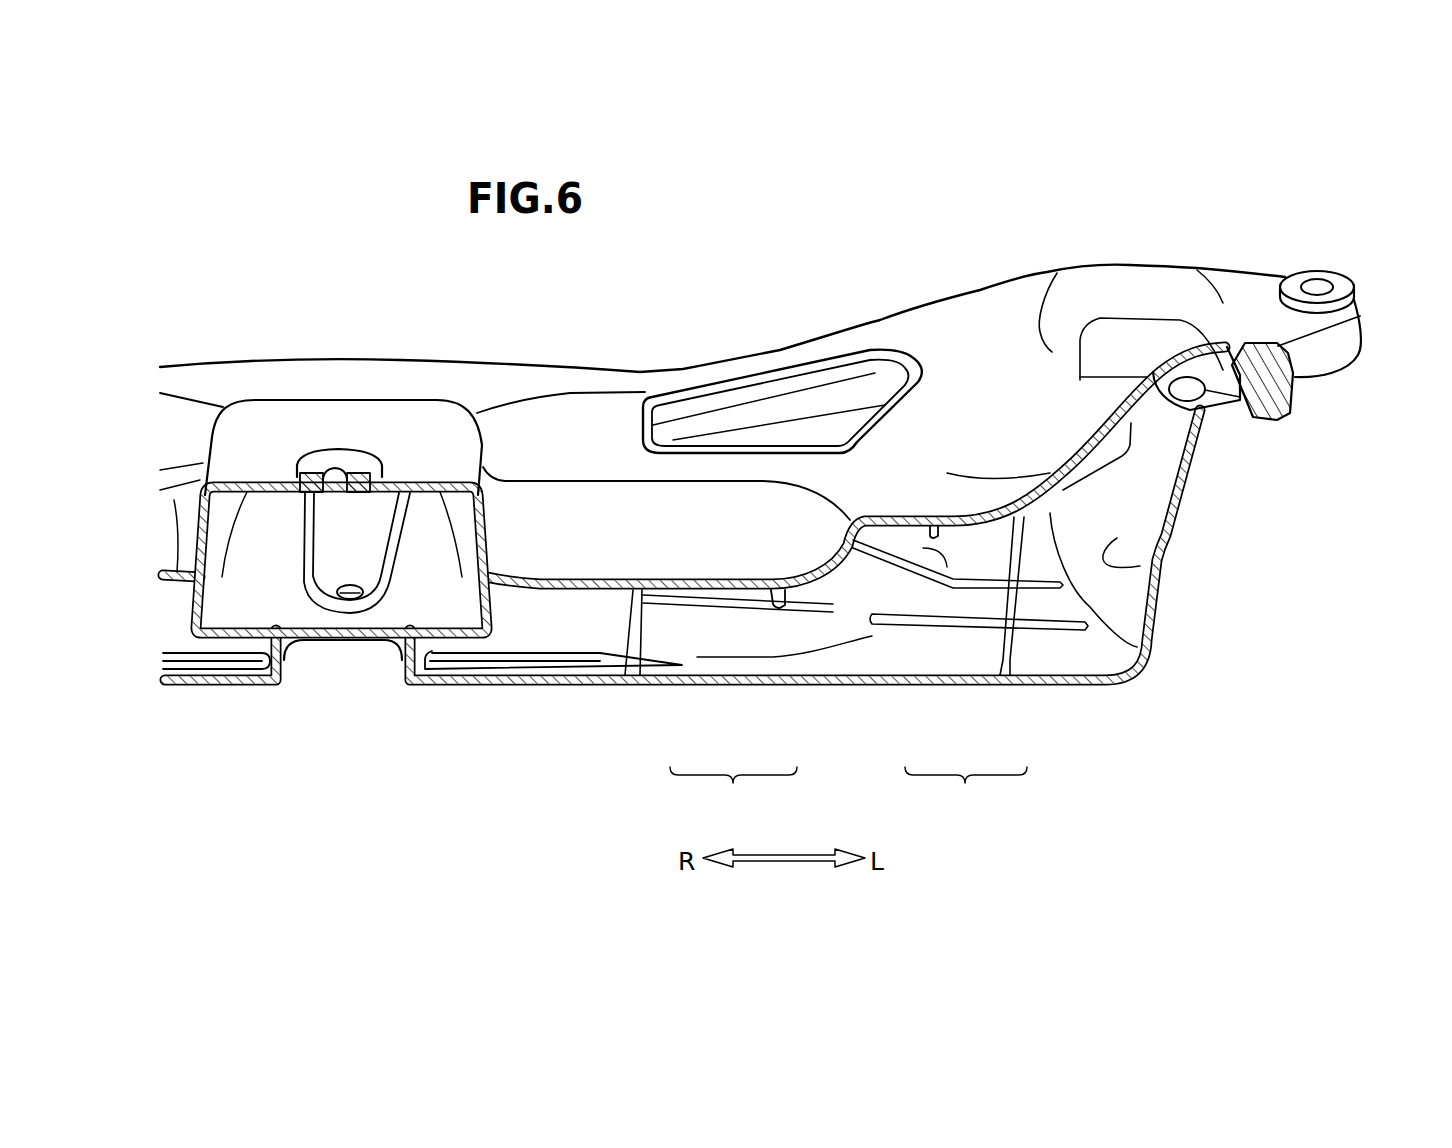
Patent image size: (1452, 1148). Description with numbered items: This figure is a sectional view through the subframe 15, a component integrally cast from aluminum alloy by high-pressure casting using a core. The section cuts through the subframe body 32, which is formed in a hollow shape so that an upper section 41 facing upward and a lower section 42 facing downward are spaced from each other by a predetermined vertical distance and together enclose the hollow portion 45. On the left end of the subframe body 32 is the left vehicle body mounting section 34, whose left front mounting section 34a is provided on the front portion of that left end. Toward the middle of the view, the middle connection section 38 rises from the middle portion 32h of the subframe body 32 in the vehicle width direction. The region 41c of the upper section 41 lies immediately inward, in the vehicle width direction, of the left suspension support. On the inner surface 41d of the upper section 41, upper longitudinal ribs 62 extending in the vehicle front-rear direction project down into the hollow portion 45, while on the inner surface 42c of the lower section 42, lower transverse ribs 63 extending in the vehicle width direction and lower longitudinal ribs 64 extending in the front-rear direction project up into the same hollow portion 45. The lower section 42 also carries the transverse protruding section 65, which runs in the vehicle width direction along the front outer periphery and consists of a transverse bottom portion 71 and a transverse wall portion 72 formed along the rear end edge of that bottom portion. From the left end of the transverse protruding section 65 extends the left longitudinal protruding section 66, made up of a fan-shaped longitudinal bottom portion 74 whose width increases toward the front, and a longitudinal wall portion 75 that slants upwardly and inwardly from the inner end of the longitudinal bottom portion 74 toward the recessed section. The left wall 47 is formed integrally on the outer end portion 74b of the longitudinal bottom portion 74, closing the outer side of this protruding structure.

The subframe 15 is at (969, 198).
The subframe body 32 is at (690, 354).
The middle portion 32h is at (350, 390).
The left vehicle body mounting section 34 is at (1300, 258).
The left front mounting section 34a is at (1340, 282).
The middle connection section 38 is at (287, 430).
The upper section 41 is at (530, 420).
The region 41c is at (1010, 387).
The inner surface 41d is at (664, 597).
The lower section 42 is at (851, 688).
The inner surface 42c is at (568, 632).
The hollow portion 45 is at (937, 590).
The left wall 47 is at (1140, 566).
The upper longitudinal ribs 62 is at (912, 525).
The lower transverse ribs 63 is at (198, 668).
The lower longitudinal ribs 64 is at (625, 672).
The transverse protruding section 65 is at (733, 795).
The left longitudinal protruding section 66 is at (966, 795).
The transverse bottom portion 71 is at (780, 660).
The transverse wall portion 72 is at (723, 638).
The longitudinal bottom portion 74 is at (985, 647).
The outer end portion 74b is at (1147, 647).
The longitudinal wall portion 75 is at (965, 482).